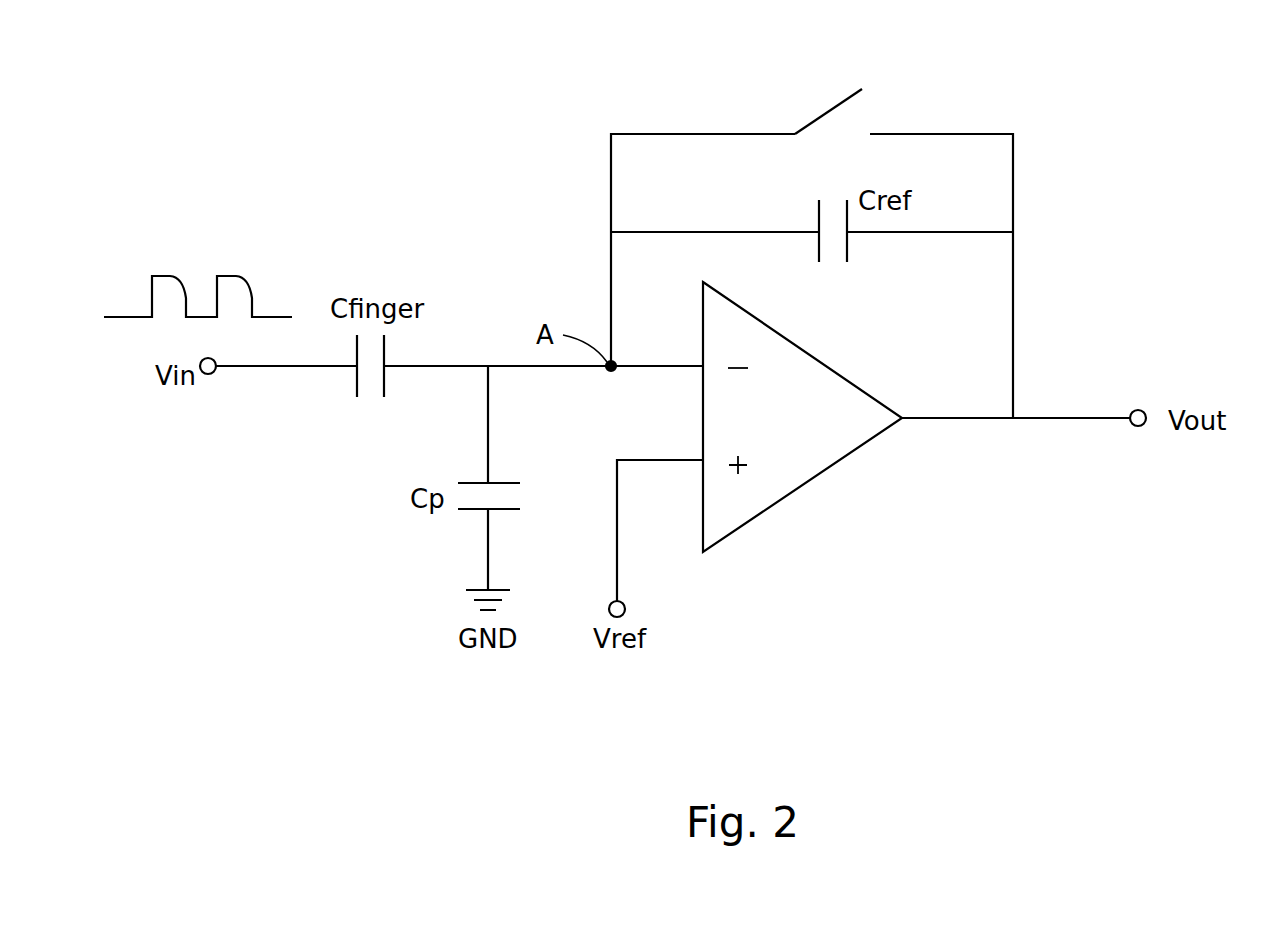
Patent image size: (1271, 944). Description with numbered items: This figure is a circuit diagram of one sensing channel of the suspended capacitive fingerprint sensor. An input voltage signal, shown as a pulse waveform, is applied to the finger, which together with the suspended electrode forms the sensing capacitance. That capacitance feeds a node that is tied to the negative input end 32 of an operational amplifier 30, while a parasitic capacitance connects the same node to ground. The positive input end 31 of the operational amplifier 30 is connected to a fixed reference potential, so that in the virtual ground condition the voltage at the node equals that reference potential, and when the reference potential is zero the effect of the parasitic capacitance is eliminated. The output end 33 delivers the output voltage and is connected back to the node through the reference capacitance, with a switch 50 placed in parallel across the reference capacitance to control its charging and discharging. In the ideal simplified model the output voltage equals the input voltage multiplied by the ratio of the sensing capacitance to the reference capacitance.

The operational amplifier 30 is at (809, 480).
The positive input end 31 is at (733, 497).
The negative input end 32 is at (720, 381).
The output end 33 is at (880, 430).
The switch 50 is at (813, 121).